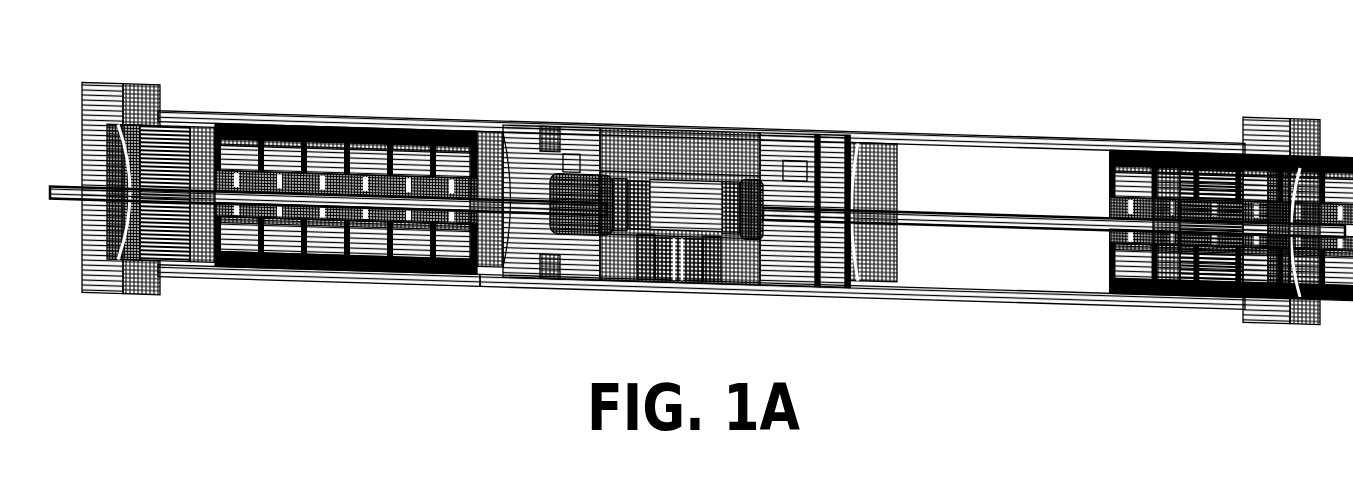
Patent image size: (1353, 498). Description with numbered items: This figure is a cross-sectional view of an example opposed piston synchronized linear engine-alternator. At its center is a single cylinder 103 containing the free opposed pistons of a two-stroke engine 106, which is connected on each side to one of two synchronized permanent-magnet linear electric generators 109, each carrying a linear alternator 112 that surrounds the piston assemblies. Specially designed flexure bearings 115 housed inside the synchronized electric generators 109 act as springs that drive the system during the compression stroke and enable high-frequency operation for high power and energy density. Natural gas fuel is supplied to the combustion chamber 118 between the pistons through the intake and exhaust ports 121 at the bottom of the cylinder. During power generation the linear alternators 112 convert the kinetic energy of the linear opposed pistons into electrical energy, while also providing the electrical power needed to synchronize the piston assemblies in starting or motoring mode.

The single cylinder 103 is at (317, 278).
The two-stroke engine 106 is at (545, 305).
The synchronized permanent-magnet linear electric generator 109 is at (458, 99).
The linear alternator 112 is at (350, 120).
The flexure bearings 115 is at (1196, 167).
The combustion chamber 118 is at (680, 203).
The intake and exhaust ports 121 is at (717, 277).